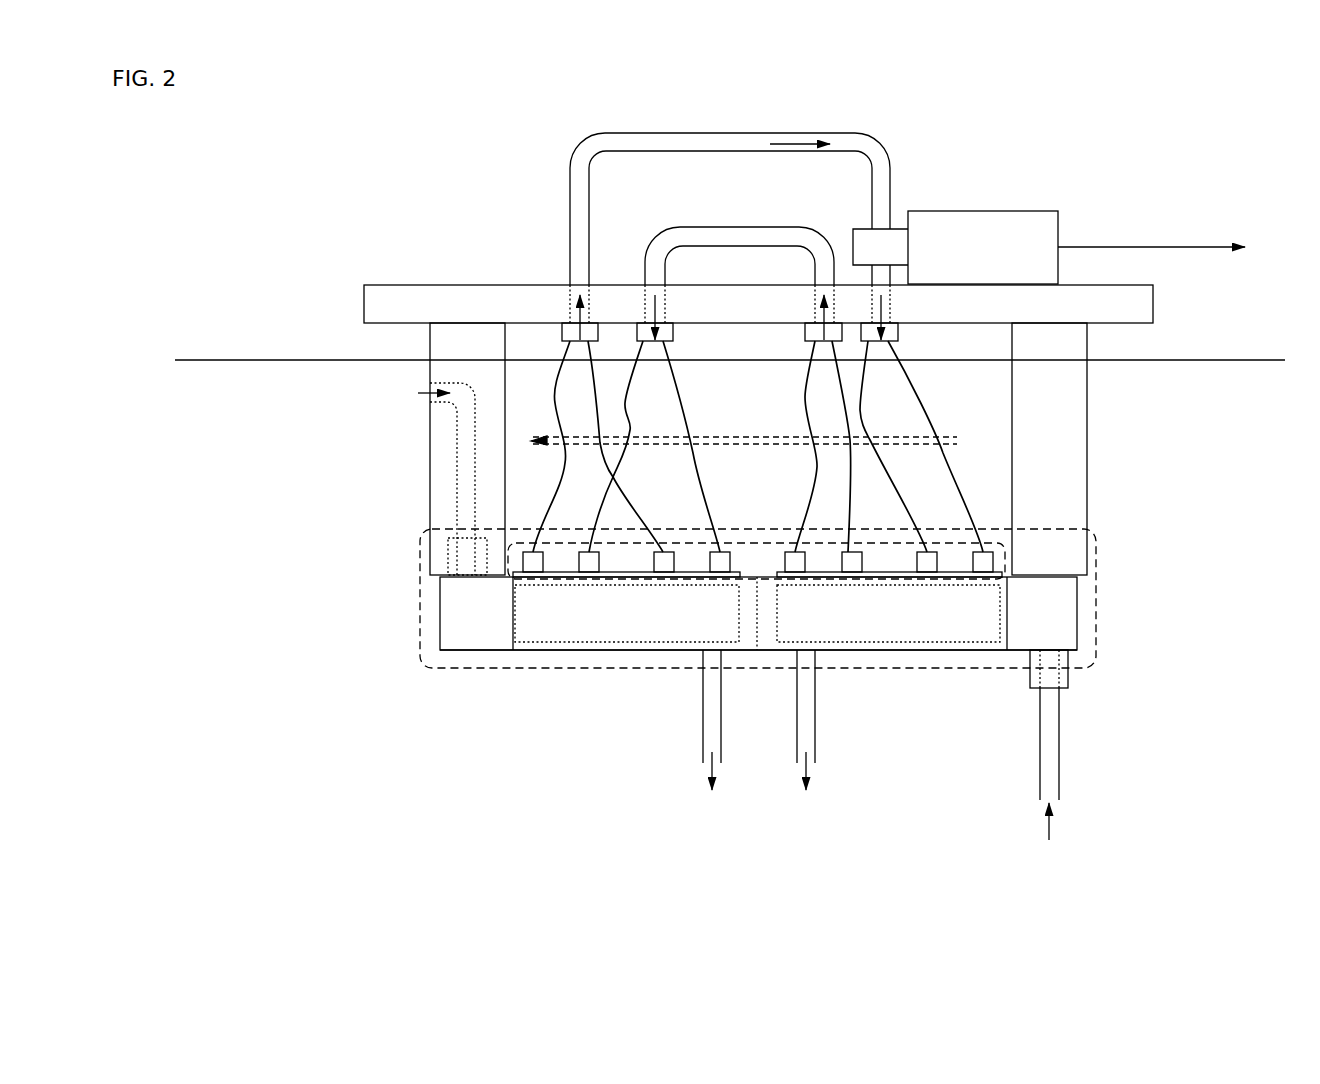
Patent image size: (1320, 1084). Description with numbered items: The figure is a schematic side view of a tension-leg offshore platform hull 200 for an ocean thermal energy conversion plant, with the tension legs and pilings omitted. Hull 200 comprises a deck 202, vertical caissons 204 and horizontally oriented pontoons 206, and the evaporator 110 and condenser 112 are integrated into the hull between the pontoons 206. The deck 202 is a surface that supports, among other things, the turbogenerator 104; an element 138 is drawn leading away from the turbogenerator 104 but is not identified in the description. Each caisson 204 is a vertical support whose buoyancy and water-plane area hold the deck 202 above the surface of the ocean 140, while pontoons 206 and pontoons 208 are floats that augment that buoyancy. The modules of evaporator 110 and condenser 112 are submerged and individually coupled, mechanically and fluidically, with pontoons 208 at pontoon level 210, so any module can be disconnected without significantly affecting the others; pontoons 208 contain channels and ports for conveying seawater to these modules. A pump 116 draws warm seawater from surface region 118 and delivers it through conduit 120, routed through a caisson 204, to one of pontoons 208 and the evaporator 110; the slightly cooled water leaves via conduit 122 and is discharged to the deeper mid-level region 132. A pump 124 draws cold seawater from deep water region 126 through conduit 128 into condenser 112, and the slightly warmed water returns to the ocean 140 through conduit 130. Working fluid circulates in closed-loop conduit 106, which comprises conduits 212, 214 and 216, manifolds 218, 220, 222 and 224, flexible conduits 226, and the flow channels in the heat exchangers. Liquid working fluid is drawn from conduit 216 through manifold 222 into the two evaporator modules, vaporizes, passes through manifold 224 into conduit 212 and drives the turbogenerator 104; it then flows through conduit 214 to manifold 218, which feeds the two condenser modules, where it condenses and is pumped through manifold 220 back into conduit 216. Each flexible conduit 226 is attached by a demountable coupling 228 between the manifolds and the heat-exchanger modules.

The hull 200 is at (375, 200).
The turbogenerator 104 is at (1003, 210).
The closed-loop conduit 106 is at (530, 171).
The evaporator 110 is at (626, 597).
The condenser 112 is at (889, 597).
The pump 116 is at (453, 557).
The surface region 118 is at (393, 413).
The conduit 120 is at (457, 427).
The conduit 122 is at (702, 723).
The pump 124 is at (1068, 686).
The deep water region 126 is at (1040, 865).
The conduit 128 is at (1040, 764).
The conduit 130 is at (815, 723).
The mid-level region 132 is at (757, 819).
The electrical power output 138 is at (1192, 248).
The ocean 140 is at (1258, 398).
The deck 202 is at (419, 313).
The caissons 204 is at (430, 483).
The pontoons 206 is at (495, 624).
The pontoons 208 is at (608, 652).
The pontoon level 210 is at (1096, 602).
The conduit 212 is at (878, 146).
The conduit 214 is at (893, 292).
The conduit 216 is at (787, 224).
The manifold 218 is at (898, 328).
The manifold 220 is at (805, 330).
The manifold 222 is at (675, 328).
The manifold 224 is at (563, 330).
The flexible conduits 226 is at (957, 440).
The demountable coupling 228 is at (1007, 553).